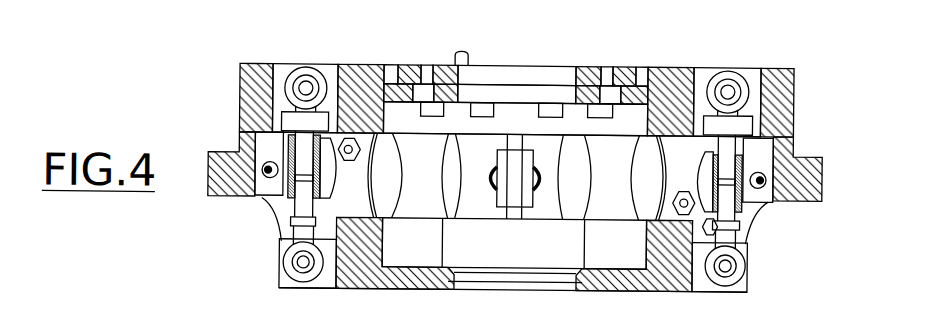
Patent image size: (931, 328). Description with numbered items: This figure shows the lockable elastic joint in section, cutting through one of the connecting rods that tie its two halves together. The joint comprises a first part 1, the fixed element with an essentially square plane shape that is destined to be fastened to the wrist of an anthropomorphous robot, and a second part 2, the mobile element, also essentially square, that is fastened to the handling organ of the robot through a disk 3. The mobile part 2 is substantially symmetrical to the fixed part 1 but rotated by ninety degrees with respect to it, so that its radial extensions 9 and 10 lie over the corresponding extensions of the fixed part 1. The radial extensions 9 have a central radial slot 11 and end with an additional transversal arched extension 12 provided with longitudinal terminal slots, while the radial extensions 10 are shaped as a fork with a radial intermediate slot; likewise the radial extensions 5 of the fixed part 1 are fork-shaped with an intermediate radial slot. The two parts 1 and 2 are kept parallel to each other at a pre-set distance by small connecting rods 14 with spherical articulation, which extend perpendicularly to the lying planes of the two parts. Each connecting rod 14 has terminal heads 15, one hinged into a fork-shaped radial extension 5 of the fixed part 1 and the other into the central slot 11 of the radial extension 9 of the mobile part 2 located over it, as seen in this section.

The first part 1 is at (362, 300).
The second part 2 is at (667, 56).
The disk 3 is at (403, 67).
The radial extensions 5 is at (327, 285).
The radial extensions 9 is at (250, 80).
The radial extensions 10 is at (481, 272).
The central radial slot 11 is at (280, 73).
The transversal arched extension 12 is at (226, 160).
The small connecting rods 14 is at (515, 150).
The terminal heads 15 is at (311, 84).